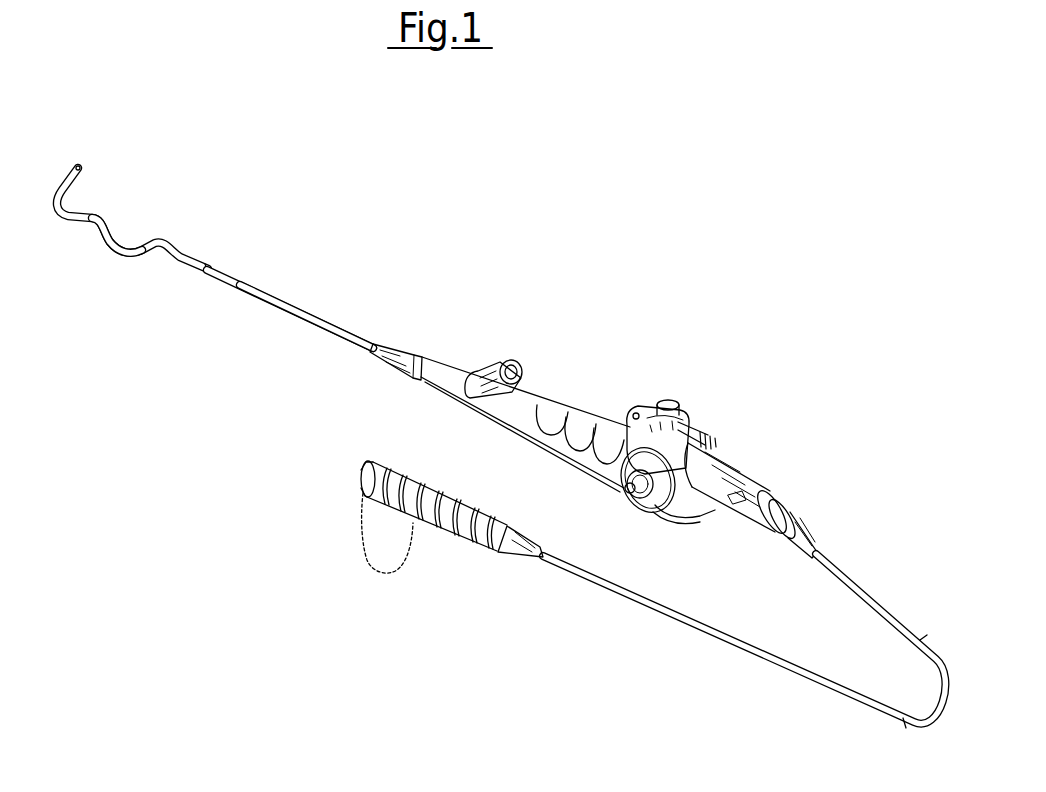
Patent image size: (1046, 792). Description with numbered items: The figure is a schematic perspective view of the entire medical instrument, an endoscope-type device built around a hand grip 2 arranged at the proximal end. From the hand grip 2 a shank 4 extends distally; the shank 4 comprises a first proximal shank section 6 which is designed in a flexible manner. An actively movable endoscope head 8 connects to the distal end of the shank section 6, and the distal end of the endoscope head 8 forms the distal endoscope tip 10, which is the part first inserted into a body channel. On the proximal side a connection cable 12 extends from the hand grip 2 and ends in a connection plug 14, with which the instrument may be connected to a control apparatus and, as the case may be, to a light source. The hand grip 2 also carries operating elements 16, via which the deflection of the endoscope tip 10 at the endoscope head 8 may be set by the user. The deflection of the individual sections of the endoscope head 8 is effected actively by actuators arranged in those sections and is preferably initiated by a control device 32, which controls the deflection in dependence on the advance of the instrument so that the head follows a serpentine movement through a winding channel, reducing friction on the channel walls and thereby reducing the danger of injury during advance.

The hand grip 2 is at (546, 389).
The shank 4 is at (282, 288).
The first proximal shank section 6 is at (256, 302).
The endoscope head 8 is at (104, 246).
The endoscope tip 10 is at (92, 162).
The connection cable 12 is at (568, 575).
The connection plug 14 is at (450, 546).
The operating elements 16 is at (692, 520).
The control device 32 is at (350, 468).